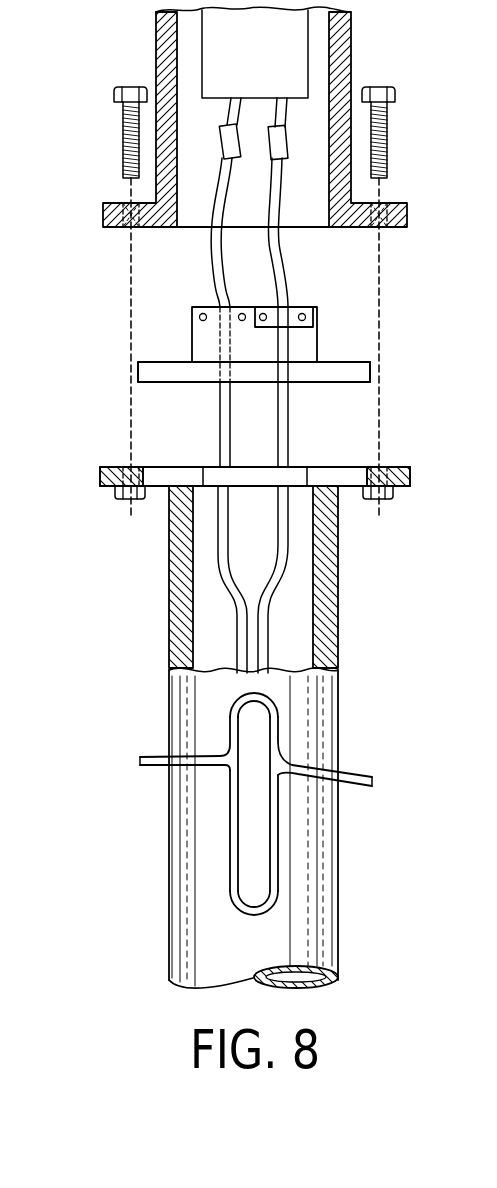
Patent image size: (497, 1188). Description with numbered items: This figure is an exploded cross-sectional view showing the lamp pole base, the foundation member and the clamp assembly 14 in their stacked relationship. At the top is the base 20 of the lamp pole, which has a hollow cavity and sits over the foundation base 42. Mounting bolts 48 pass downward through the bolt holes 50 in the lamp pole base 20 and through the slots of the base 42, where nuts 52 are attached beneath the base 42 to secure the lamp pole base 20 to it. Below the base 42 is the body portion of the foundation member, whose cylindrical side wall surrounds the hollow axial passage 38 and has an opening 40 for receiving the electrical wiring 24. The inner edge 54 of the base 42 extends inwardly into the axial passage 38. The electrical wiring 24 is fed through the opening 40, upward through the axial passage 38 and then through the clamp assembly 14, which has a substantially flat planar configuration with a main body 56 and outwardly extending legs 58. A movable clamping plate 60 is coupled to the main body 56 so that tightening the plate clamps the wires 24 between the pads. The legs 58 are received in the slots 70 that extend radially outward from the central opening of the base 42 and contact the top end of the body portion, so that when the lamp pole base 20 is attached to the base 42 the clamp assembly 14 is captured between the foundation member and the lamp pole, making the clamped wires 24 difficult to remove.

The clamp assembly 14 is at (277, 385).
The base 20 is at (350, 37).
The electrical wiring 24 is at (218, 430).
The axial passage 38 is at (292, 620).
The opening 40 is at (277, 843).
The base 42 is at (271, 479).
The mounting bolts 48 is at (122, 123).
The bolt holes 50 is at (123, 198).
The nuts 52 is at (115, 490).
The inner edge 54 is at (290, 483).
The main body 56 is at (263, 322).
The legs 58 is at (147, 370).
The movable clamping plate 60 is at (293, 312).
The slots 70 is at (153, 473).